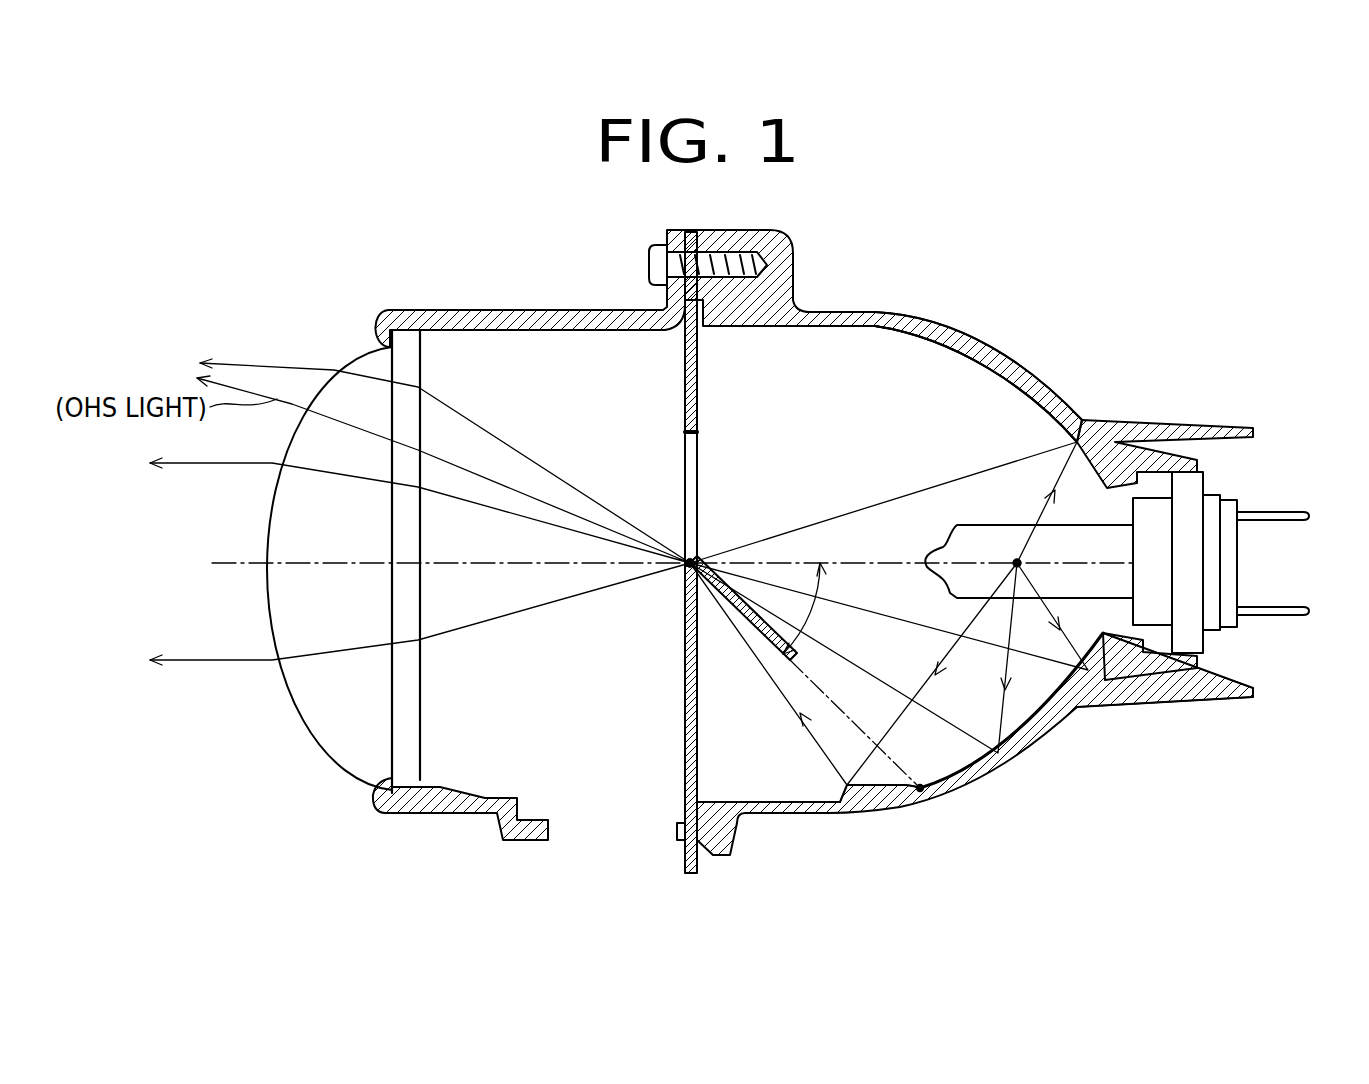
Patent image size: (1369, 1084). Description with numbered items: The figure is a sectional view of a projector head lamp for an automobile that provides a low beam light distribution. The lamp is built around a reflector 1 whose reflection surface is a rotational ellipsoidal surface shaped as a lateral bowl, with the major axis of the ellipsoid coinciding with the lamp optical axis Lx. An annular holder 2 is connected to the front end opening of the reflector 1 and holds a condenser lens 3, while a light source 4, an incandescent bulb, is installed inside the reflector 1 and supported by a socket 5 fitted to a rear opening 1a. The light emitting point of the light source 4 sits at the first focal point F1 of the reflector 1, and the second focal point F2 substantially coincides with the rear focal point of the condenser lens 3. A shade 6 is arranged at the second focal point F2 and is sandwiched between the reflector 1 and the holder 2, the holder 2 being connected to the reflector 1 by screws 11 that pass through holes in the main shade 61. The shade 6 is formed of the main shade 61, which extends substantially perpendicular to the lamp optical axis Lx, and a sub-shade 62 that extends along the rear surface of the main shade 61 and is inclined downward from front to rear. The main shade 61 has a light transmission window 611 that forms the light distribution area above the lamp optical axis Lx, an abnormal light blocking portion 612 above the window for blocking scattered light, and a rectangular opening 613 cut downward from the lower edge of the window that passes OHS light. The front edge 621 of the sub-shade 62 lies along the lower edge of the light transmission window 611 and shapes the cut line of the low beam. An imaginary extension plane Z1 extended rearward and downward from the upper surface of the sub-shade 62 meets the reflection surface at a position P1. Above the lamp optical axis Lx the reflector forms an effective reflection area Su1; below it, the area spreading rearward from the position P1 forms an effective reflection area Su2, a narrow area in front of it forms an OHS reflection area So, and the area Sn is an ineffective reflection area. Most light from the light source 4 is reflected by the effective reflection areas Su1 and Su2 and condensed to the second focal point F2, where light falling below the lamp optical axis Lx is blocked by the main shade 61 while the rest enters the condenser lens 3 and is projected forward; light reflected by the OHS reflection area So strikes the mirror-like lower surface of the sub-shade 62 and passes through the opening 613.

The reflector 1 is at (878, 313).
The rear opening 1a is at (1140, 646).
The holder 2 is at (564, 316).
The condenser lens 3 is at (343, 717).
The light source 4 is at (1080, 543).
The socket 5 is at (1212, 510).
The shade 6 is at (697, 552).
The main shade 61 is at (693, 552).
The sub-shade 62 is at (733, 585).
The light transmission window 611 is at (687, 455).
The abnormal light blocking portion 612 is at (697, 408).
The opening 613 is at (687, 608).
The front edge 621 is at (687, 560).
The screws 11 is at (650, 252).
The first focal point F1 is at (1017, 562).
The second focal point F2 is at (692, 560).
The lamp optical axis Lx is at (230, 562).
The position P1 is at (920, 788).
The effective reflection area Su1 is at (1013, 385).
The effective reflection area Su2 is at (1085, 705).
The ineffective reflection area Sn is at (830, 815).
The OHS reflection area So is at (923, 820).
The imaginary extension plane Z1 is at (826, 693).